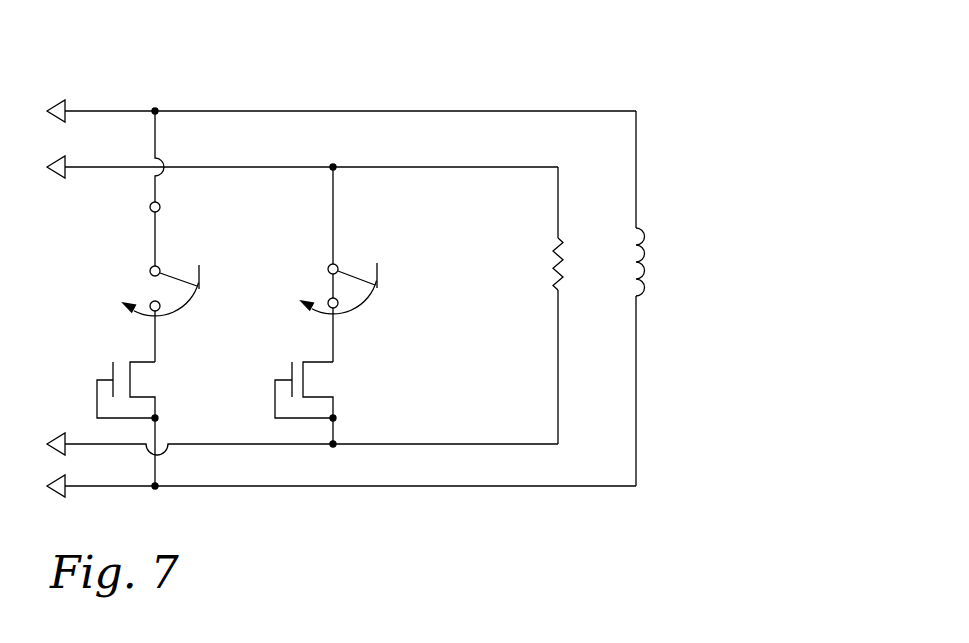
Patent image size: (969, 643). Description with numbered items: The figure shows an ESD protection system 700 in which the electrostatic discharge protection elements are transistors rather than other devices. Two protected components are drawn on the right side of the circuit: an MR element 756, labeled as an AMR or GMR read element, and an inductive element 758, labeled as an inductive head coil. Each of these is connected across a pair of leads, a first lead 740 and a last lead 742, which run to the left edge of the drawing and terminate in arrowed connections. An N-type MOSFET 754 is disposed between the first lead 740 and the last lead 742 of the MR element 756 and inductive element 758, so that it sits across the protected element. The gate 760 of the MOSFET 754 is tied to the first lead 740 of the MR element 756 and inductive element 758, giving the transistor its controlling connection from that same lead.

The ESD protection system 700 is at (348, 83).
The last lead 742 is at (424, 165).
The first lead 740 is at (455, 515).
The N-type MOSFET 754 is at (153, 382).
The gate 760 is at (95, 403).
The MR element 756 is at (562, 238).
The inductive element 758 is at (650, 222).